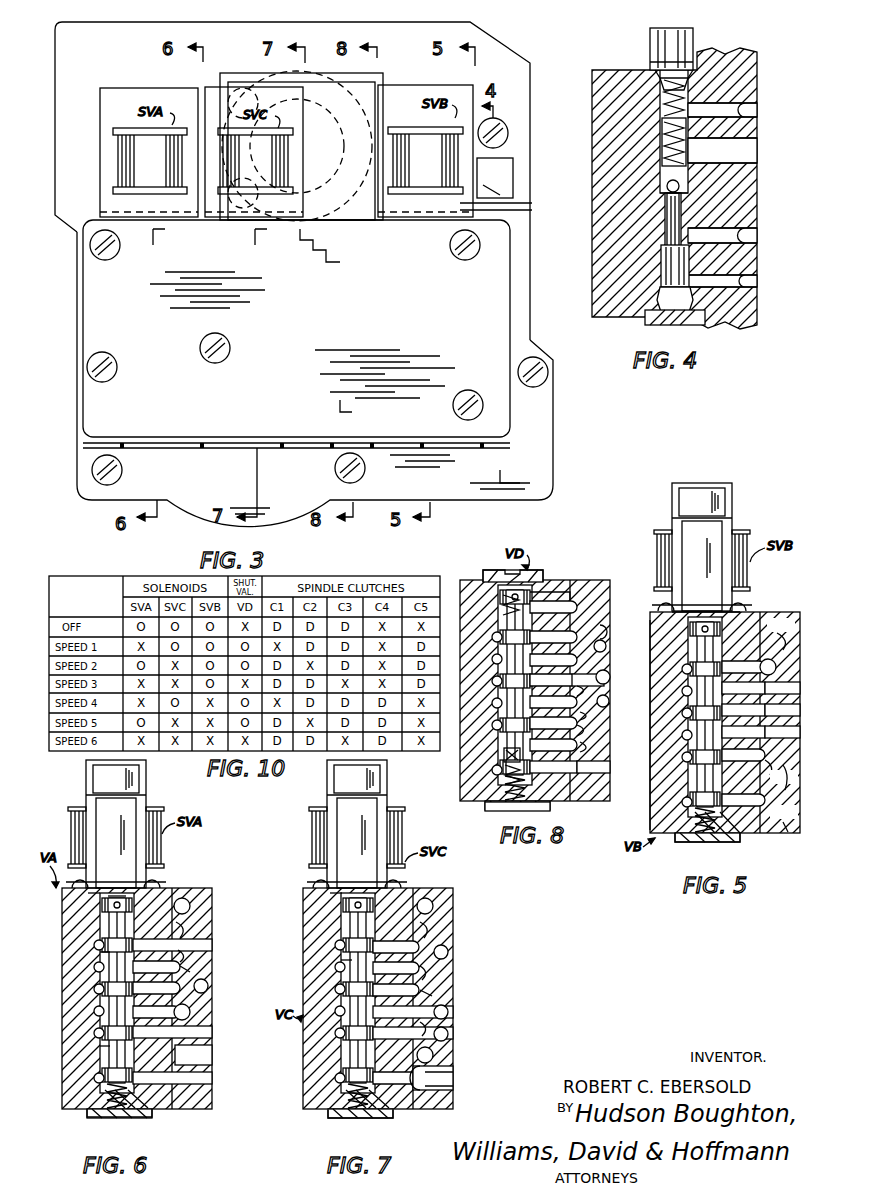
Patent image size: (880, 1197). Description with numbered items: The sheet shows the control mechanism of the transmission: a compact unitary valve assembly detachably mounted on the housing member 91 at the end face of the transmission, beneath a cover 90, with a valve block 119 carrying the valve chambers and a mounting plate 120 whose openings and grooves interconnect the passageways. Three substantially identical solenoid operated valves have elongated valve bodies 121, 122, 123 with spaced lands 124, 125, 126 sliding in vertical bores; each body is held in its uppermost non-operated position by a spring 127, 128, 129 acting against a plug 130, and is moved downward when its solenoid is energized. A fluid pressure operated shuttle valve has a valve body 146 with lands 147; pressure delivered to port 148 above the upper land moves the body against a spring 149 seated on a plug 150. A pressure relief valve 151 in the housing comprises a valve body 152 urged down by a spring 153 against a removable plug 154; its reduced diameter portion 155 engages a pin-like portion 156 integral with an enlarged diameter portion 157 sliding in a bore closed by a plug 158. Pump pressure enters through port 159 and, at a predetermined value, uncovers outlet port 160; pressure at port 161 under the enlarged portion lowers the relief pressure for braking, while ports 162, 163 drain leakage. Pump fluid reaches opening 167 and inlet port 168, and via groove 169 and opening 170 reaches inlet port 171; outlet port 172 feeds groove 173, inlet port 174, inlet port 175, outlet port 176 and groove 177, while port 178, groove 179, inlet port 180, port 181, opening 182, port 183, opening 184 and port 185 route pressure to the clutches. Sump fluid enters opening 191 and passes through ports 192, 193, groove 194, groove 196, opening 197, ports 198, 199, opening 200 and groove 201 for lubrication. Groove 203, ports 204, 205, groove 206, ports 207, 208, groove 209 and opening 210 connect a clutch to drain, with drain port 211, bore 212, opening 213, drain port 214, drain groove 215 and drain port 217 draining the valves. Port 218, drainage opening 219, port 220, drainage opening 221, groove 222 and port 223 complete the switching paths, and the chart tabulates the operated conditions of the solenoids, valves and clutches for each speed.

In FIG. 3, the housing cover 90 is at (518, 60).
In FIG. 3, the housing member 91 is at (530, 268).
In FIG. 4, the housing member 91 is at (592, 148).
In FIG. 3, the valve block 119 is at (85, 335).
In FIG. 5, the mounting plate 120 is at (782, 836).
In FIG. 6, the mounting plate 120 is at (185, 890).
In FIG. 6, the valve body 121 is at (97, 895).
In FIG. 5, the valve body 122 is at (715, 616).
In FIG. 7, the valve body 123 is at (330, 895).
In FIG. 6, the land 124 is at (100, 1049).
In FIG. 5, the land 125 is at (652, 657).
In FIG. 7, the land 126 is at (341, 960).
In FIG. 6, the spring 127 is at (86, 1112).
In FIG. 5, the spring 128 is at (720, 840).
In FIG. 7, the spring 129 is at (327, 1113).
In FIG. 5, the plug 130 is at (690, 840).
In FIG. 6, the plug 130 is at (140, 1112).
In FIG. 7, the plug 130 is at (382, 1112).
In FIG. 8, the valve body 146 is at (503, 740).
In FIG. 8, the land 147 is at (492, 575).
In FIG. 8, the valve port 148 is at (548, 600).
In FIG. 8, the spring 149 is at (503, 782).
In FIG. 8, the plug 150 is at (553, 810).
In FIG. 4, the pressure relief valve 151 is at (653, 115).
In FIG. 4, the valve body 152 is at (687, 153).
In FIG. 4, the spring 153 is at (660, 78).
In FIG. 4, the removable plug 154 is at (690, 55).
In FIG. 4, the reduced diameter portion 155 is at (667, 200).
In FIG. 4, the pin-like portion 156 is at (679, 215).
In FIG. 4, the enlarged diameter portion 157 is at (661, 274).
In FIG. 4, the plug 158 is at (655, 320).
In FIG. 4, the port 159 is at (667, 186).
In FIG. 4, the outlet port 160 is at (745, 150).
In FIG. 4, the port 161 is at (748, 282).
In FIG. 4, the port 162 is at (750, 104).
In FIG. 4, the port 163 is at (745, 230).
In FIG. 5, the opening 167 is at (782, 710).
In FIG. 5, the inlet port 168 is at (743, 710).
In FIG. 8, the groove 169 is at (607, 646).
In FIG. 6, the groove 169 is at (208, 987).
In FIG. 7, the groove 169 is at (448, 953).
In FIG. 6, the opening 170 is at (195, 970).
In FIG. 6, the inlet port 171 is at (156, 988).
In FIG. 6, the outlet port 172 is at (156, 967).
In FIG. 8, the groove 173 is at (600, 606).
In FIG. 6, the groove 173 is at (195, 958).
In FIG. 7, the groove 173 is at (440, 975).
In FIG. 7, the inlet port 174 is at (396, 990).
In FIG. 8, the inlet port 175 is at (553, 637).
In FIG. 7, the outlet port 176 is at (396, 968).
In FIG. 8, the groove 177 is at (580, 595).
In FIG. 7, the groove 177 is at (440, 932).
In FIG. 8, the port 178 is at (553, 660).
In FIG. 8, the groove 179 is at (605, 628).
In FIG. 5, the groove 179 is at (782, 704).
In FIG. 5, the inlet port 180 is at (747, 762).
In FIG. 5, the port 181 is at (743, 732).
In FIG. 5, the opening 182 is at (782, 732).
In FIG. 5, the port 183 is at (743, 688).
In FIG. 5, the opening 184 is at (782, 688).
In FIG. 5, the port 185 is at (749, 667).
In FIG. 8, the opening 191 is at (600, 770).
In FIG. 8, the port 192 is at (553, 767).
In FIG. 8, the port 193 is at (553, 745).
In FIG. 8, the groove 194 is at (600, 730).
In FIG. 8, the groove 196 is at (598, 750).
In FIG. 7, the groove 196 is at (440, 1030).
In FIG. 7, the opening 197 is at (448, 1036).
In FIG. 7, the port 198 is at (413, 1033).
In FIG. 7, the port 199 is at (413, 1012).
In FIG. 7, the opening 200 is at (440, 994).
In FIG. 8, the groove 201 is at (610, 702).
In FIG. 7, the groove 201 is at (448, 1012).
In FIG. 8, the groove 203 is at (598, 690).
In FIG. 8, the port 204 is at (553, 702).
In FIG. 8, the port 205 is at (553, 723).
In FIG. 8, the groove 206 is at (598, 716).
In FIG. 6, the groove 206 is at (190, 906).
In FIG. 7, the groove 206 is at (433, 906).
In FIG. 6, the port 207 is at (156, 1012).
In FIG. 6, the port 208 is at (205, 1032).
In FIG. 6, the groove 209 is at (205, 1055).
In FIG. 7, the opening 210 is at (453, 1078).
In FIG. 6, the port 211 is at (205, 1078).
In FIG. 6, the bore 212 is at (100, 957).
In FIG. 6, the opening 213 is at (118, 892).
In FIG. 5, the drain port 214 is at (743, 800).
In FIG. 5, the drain groove 215 is at (784, 818).
In FIG. 7, the drain port 217 is at (413, 1078).
In FIG. 6, the port 218 is at (172, 945).
In FIG. 6, the drainage opening 219 is at (195, 930).
In FIG. 8, the port 220 is at (553, 680).
In FIG. 8, the drainage opening 221 is at (588, 680).
In FIG. 8, the groove 222 is at (611, 678).
In FIG. 7, the port 223 is at (396, 947).